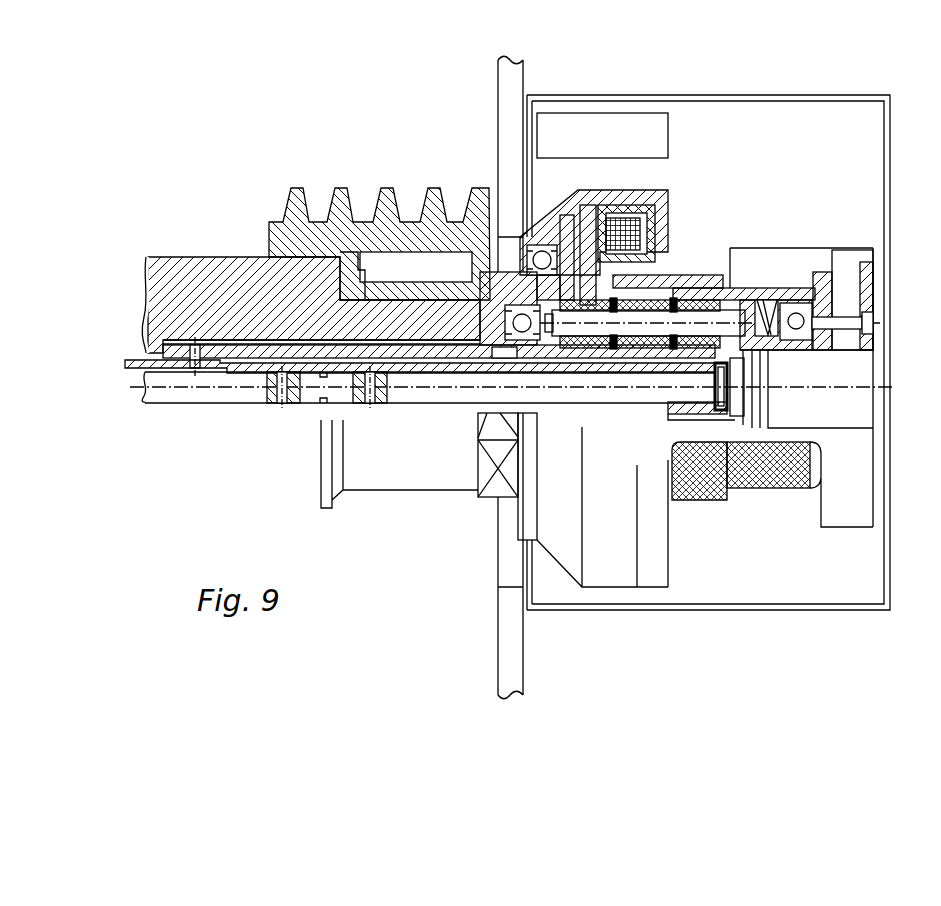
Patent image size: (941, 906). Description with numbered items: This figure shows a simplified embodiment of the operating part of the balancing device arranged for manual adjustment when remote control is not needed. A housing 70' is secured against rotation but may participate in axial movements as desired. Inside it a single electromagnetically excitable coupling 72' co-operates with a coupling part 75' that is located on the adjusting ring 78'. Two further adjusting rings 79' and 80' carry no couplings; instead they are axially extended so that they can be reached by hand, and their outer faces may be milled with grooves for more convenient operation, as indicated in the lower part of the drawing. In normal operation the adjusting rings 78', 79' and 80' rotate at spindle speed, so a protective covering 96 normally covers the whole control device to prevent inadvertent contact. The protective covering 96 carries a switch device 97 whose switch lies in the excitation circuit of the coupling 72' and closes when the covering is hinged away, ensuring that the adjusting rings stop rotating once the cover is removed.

The housing 70' is at (616, 231).
The electromagnetically excitable coupling 72' is at (659, 234).
The coupling part 75' is at (598, 235).
The adjusting ring 78' is at (566, 233).
The adjusting ring 79' is at (773, 261).
The adjusting ring 80' is at (775, 278).
The protective covering 96 is at (890, 229).
The switch device 97 is at (587, 141).